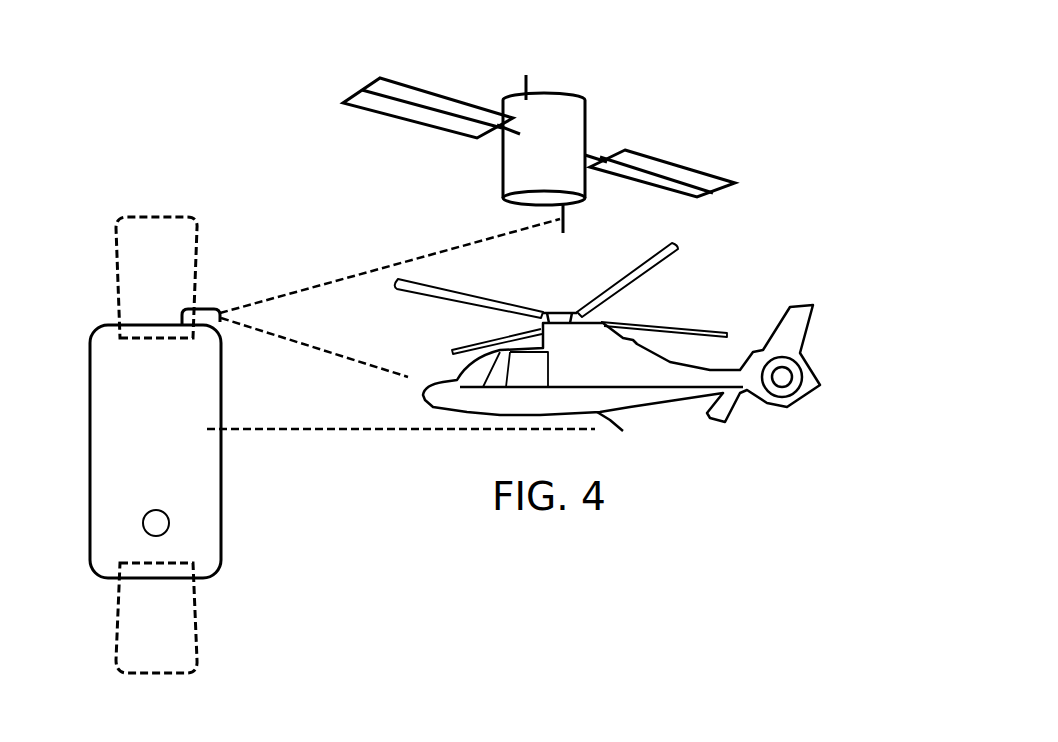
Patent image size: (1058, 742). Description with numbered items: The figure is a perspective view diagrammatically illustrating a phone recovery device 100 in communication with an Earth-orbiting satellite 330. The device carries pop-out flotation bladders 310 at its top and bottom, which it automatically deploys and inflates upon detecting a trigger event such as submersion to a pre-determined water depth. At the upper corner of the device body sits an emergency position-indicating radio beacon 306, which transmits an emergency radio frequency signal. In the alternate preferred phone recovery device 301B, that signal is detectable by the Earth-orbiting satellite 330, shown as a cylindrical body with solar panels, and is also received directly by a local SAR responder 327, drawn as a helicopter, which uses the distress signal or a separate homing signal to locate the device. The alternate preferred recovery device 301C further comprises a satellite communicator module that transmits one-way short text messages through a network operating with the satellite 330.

The wearable communication device 100 is at (148, 409).
The pop-out flotation bladders 310 is at (196, 222).
The emergency position-indicating radio beacon 306 is at (202, 308).
The phone recovery device 301B is at (262, 315).
The recovery device 301C is at (252, 347).
The Earth-orbiting satellite 330 is at (586, 100).
The local SAR responder 327 is at (660, 310).